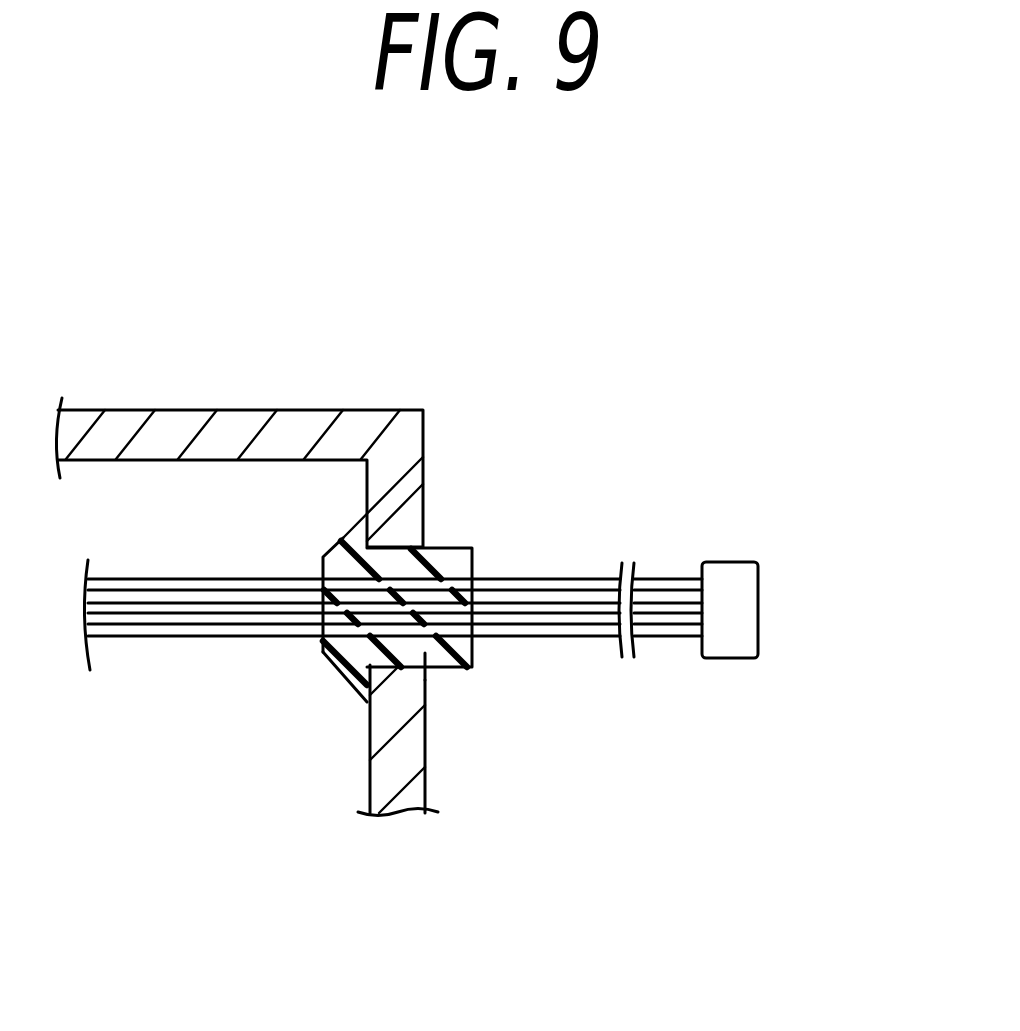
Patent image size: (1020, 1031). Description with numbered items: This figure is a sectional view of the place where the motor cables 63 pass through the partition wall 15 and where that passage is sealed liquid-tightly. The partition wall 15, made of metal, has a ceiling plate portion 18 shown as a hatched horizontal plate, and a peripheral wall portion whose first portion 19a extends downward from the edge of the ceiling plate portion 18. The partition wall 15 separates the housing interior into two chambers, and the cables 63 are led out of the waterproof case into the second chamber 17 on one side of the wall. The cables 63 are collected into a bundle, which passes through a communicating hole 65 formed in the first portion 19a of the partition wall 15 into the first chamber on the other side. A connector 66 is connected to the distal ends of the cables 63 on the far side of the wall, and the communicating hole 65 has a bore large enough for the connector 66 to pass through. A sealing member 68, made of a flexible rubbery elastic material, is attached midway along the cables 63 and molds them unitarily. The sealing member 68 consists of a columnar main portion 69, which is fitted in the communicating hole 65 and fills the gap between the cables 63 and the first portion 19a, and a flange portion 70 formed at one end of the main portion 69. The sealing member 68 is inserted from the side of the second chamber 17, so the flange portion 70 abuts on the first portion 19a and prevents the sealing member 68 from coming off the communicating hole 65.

The partition wall 15 is at (297, 404).
The second chamber 17 is at (265, 488).
The ceiling plate portion 18 is at (152, 440).
The first portion 19a is at (410, 800).
The cables 63 is at (212, 633).
The communicating hole 65 is at (408, 545).
The connector 66 is at (742, 619).
The sealing member 68 is at (362, 734).
The main portion 69 is at (425, 680).
The flange portion 70 is at (343, 677).